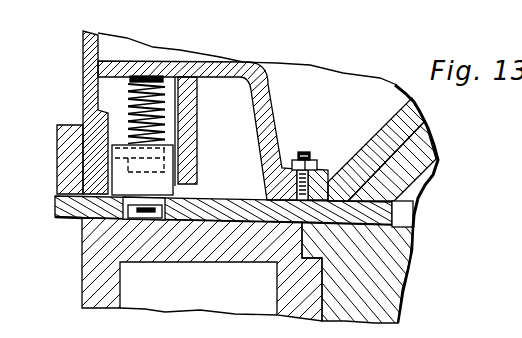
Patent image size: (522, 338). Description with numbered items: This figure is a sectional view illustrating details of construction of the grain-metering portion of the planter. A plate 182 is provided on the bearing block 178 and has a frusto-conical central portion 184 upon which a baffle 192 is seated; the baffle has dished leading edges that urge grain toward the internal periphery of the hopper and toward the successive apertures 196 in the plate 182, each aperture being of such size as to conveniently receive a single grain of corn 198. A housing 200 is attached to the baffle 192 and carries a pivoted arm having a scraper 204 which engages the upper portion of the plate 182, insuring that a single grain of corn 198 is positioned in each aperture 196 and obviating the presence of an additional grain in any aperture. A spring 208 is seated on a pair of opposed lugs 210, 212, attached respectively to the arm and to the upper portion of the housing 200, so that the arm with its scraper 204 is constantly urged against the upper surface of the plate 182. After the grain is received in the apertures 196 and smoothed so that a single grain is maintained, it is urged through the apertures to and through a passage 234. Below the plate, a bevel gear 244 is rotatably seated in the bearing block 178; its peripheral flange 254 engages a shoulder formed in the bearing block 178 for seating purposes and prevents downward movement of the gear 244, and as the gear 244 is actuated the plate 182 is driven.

The bearing block 178 is at (83, 276).
The plate 182 is at (243, 220).
The frusto-conical central portion 184 is at (405, 178).
The baffle 192 is at (395, 115).
The apertures 196 is at (123, 197).
The grain of corn 198 is at (160, 218).
The housing 200 is at (196, 62).
The scraper 204 is at (178, 185).
The spring 208 is at (130, 97).
The lug 210 is at (133, 76).
The lug 212 is at (163, 127).
The passage 234 is at (502, 6).
The gear 244 is at (402, 292).
The peripheral flange 254 is at (313, 242).